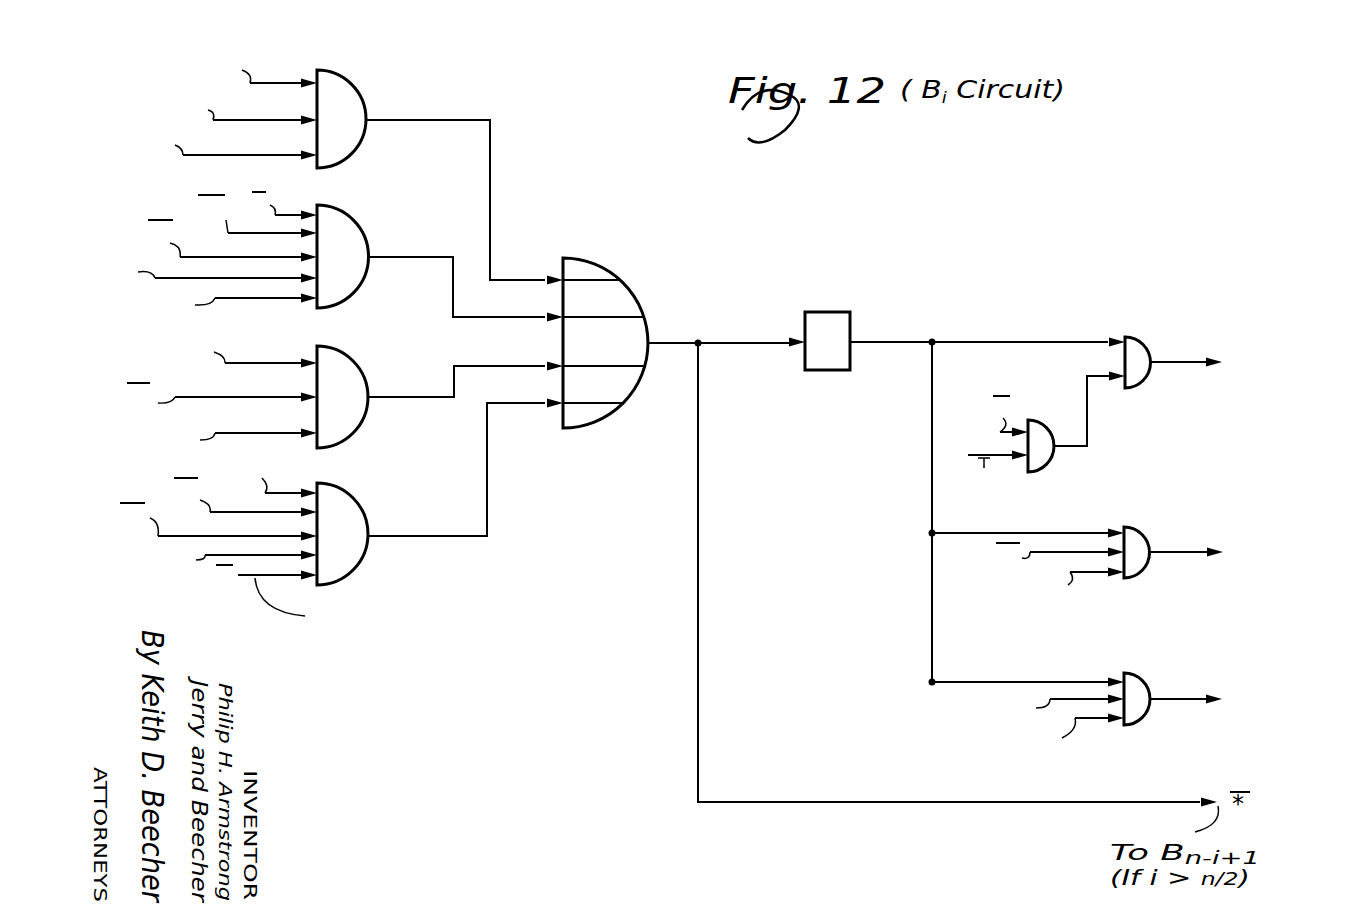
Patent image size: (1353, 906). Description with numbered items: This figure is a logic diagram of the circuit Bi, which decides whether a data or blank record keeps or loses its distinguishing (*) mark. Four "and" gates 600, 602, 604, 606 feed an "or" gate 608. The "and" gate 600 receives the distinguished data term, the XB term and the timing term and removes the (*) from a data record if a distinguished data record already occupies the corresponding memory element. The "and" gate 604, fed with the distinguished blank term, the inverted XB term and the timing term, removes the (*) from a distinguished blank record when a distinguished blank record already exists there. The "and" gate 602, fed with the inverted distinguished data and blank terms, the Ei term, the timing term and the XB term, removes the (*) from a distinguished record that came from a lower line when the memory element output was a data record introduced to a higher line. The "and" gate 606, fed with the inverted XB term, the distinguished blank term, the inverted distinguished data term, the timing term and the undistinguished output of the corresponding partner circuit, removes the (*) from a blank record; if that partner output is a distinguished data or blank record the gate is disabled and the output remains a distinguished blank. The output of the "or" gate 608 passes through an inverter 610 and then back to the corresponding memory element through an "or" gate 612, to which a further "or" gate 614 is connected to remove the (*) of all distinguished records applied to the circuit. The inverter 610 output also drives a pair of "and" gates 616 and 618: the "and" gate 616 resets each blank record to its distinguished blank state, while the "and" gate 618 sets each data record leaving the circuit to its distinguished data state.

The "and" gate 600 is at (355, 100).
The "and" gate 602 is at (352, 238).
The "and" gate 604 is at (347, 377).
The "and" gate 606 is at (347, 512).
The "or" gate 608 is at (626, 302).
The inverter 610 is at (830, 322).
The "or" gate 612 is at (1147, 352).
The "or" gate 614 is at (1045, 450).
The "and" gate 616 is at (1140, 542).
The "and" gate 618 is at (1140, 682).